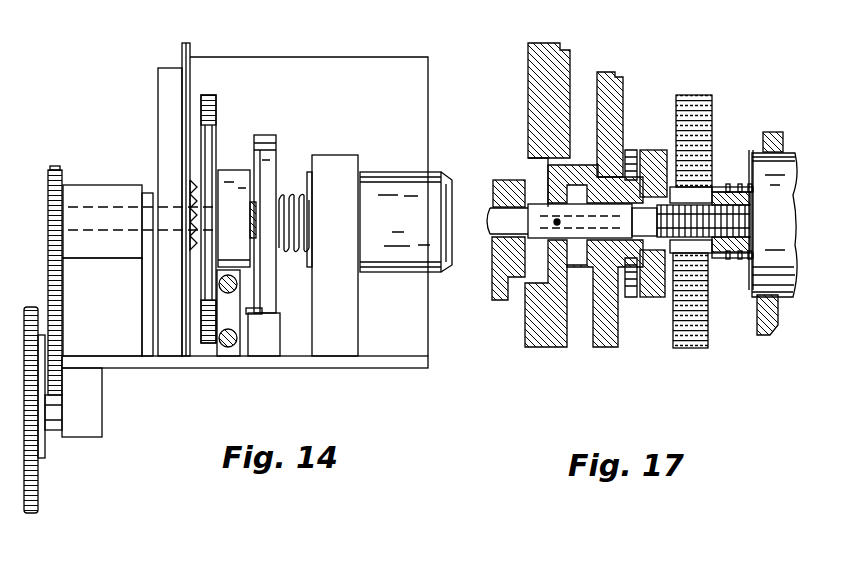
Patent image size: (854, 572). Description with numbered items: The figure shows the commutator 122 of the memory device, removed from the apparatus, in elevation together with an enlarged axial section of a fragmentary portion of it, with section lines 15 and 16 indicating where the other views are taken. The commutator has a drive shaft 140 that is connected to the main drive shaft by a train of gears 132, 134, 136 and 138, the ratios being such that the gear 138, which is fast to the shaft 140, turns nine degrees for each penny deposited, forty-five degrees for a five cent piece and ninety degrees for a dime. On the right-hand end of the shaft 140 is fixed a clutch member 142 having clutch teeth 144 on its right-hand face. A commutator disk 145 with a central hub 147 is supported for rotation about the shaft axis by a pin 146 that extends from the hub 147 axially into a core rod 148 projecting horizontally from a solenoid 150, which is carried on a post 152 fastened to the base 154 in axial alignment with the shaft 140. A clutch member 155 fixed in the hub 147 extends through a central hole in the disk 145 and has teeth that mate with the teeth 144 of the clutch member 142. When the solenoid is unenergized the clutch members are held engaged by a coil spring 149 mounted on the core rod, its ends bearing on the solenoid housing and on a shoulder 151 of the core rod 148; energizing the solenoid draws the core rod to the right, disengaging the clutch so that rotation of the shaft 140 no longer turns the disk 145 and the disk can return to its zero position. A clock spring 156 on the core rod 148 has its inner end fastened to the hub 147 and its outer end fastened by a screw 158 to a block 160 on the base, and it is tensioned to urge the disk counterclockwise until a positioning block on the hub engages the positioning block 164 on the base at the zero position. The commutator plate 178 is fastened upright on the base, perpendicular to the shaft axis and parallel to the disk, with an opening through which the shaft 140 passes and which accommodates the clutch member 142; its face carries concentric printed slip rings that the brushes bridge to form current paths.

In FIG. 14, the section line 15- 15 is at (178, 36).
In FIG. 14, the section line 16- 16 is at (208, 17).
In FIG. 14, the commutator 122 is at (412, 48).
In FIG. 14, the gear 132 is at (37, 504).
In FIG. 14, the gear 134 is at (50, 435).
In FIG. 14, the gear 136 is at (58, 292).
In FIG. 14, the gear 138 is at (53, 170).
In FIG. 14, the drive shaft 140 is at (96, 208).
In FIG. 17, the drive shaft 140 is at (490, 237).
In FIG. 17, the clutch member 142 is at (525, 282).
In FIG. 14, the clutch teeth 144 is at (190, 229).
In FIG. 17, the clutch teeth 144 is at (548, 270).
In FIG. 14, the commutator disk 145 is at (212, 97).
In FIG. 17, the commutator disk 145 is at (623, 92).
In FIG. 17, the pin 146 is at (690, 205).
In FIG. 14, the hub 147 is at (226, 172).
In FIG. 17, the hub 147 is at (662, 298).
In FIG. 17, the core rod 148 is at (742, 262).
In FIG. 14, the coil spring 149 is at (297, 193).
In FIG. 17, the coil spring 149 is at (740, 187).
In FIG. 14, the solenoid 150 is at (406, 222).
In FIG. 17, the solenoid 150 is at (774, 225).
In FIG. 17, the shoulder 151 is at (722, 260).
In FIG. 14, the post 152 is at (350, 341).
In FIG. 14, the base 154 is at (408, 369).
In FIG. 17, the clutch member 155 is at (582, 268).
In FIG. 14, the clock spring 156 is at (267, 137).
In FIG. 17, the clock spring 156 is at (687, 95).
In FIG. 14, the screw 158 is at (248, 311).
In FIG. 14, the block 160 is at (265, 352).
In FIG. 14, the positioning block 164 is at (232, 353).
In FIG. 14, the commutator plate 178 is at (182, 88).
In FIG. 17, the commutator plate 178 is at (565, 270).